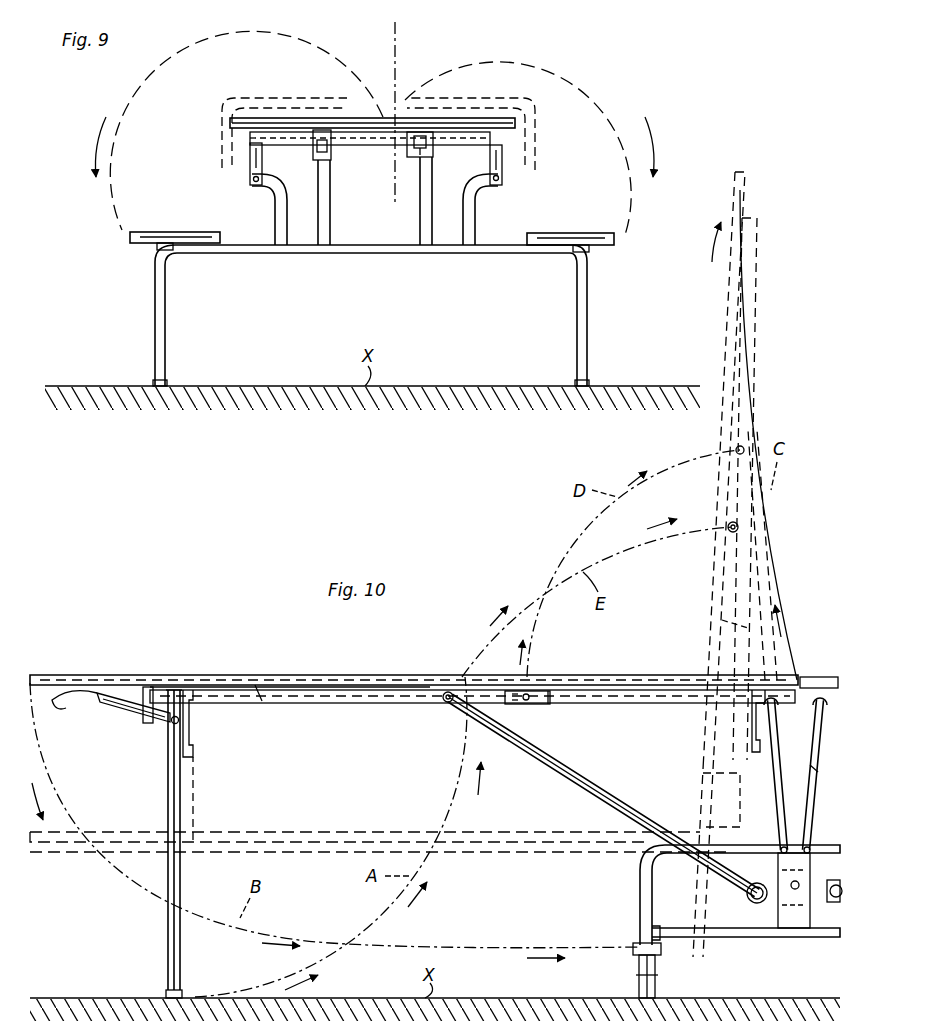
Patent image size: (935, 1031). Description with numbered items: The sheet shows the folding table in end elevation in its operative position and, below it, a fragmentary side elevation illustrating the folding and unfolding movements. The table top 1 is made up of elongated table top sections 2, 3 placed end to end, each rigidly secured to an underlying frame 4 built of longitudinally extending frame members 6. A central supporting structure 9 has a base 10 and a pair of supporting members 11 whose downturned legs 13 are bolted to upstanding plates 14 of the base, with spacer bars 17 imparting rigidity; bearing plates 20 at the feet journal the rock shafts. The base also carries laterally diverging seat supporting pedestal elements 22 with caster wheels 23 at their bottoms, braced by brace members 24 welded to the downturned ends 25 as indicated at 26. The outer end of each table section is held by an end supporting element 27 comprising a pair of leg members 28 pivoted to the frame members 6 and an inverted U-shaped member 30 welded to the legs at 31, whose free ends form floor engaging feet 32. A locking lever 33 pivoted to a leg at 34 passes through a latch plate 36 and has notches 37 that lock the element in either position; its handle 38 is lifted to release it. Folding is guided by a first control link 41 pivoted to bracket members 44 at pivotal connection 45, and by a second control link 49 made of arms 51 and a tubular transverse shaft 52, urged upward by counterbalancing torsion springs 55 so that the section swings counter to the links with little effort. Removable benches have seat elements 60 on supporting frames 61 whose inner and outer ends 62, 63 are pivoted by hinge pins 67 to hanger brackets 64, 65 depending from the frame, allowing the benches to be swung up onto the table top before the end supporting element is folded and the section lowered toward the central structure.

In FIG. 9, the table top 1 is at (455, 120).
In FIG. 10, the table top 1 is at (634, 676).
In FIG. 9, the table top section 2 is at (492, 126).
In FIG. 10, the table top section 2 is at (369, 676).
In FIG. 10, the table top section 3 is at (820, 676).
In FIG. 9, the underlying frame 4 is at (500, 141).
In FIG. 10, the underlying frame 4 is at (354, 699).
In FIG. 10, the longitudinally extending frame member 6 is at (265, 701).
In FIG. 10, the central supporting structure 9 is at (638, 866).
In FIG. 10, the base 10 is at (763, 937).
In FIG. 9, the supporting member 11 is at (416, 44).
In FIG. 10, the supporting member 11 is at (816, 792).
In FIG. 10, the leg 13 is at (814, 769).
In FIG. 10, the upstanding plate 14 is at (807, 925).
In FIG. 10, the spacer bar 17 is at (786, 706).
In FIG. 10, the bearing plate 20 is at (833, 880).
In FIG. 10, the seat supporting pedestal element 22 is at (713, 850).
In FIG. 10, the caster wheel 23 is at (638, 985).
In FIG. 10, the brace member 24 is at (733, 939).
In FIG. 10, the downturned end 25 is at (639, 908).
In FIG. 10, the brace connection 26 is at (650, 934).
In FIG. 9, the end supporting element 27 is at (378, 256).
In FIG. 10, the end supporting element 27 is at (168, 799).
In FIG. 9, the leg member 28 is at (328, 230).
In FIG. 10, the leg member 28 is at (167, 773).
In FIG. 9, the inverted U-shaped member 30 is at (452, 255).
In FIG. 10, the inverted U-shaped member 30 is at (182, 874).
In FIG. 9, the weld connection 31 is at (325, 255).
In FIG. 9, the floor engaging foot 32 is at (168, 383).
In FIG. 10, the floor engaging foot 32 is at (182, 993).
In FIG. 10, the locking lever 33 is at (130, 714).
In FIG. 10, the pivotal connection 34 is at (172, 723).
In FIG. 9, the latch plate 36 is at (430, 157).
In FIG. 10, the latch plate 36 is at (145, 720).
In FIG. 10, the notch 37 is at (110, 710).
In FIG. 9, the handle 38 is at (432, 143).
In FIG. 10, the handle 38 is at (71, 715).
In FIG. 10, the first control link 41 is at (766, 579).
In FIG. 10, the bracket member 44 is at (550, 705).
In FIG. 10, the pivotal connection 45 is at (508, 701).
In FIG. 10, the second control link 49 is at (578, 776).
In FIG. 10, the arm 51 is at (545, 764).
In FIG. 10, the tubular transverse shaft 52 is at (445, 703).
In FIG. 10, the counterbalancing torsion spring 55 is at (748, 900).
In FIG. 9, the seat element 60 is at (176, 232).
In FIG. 10, the seat element 60 is at (320, 832).
In FIG. 9, the supporting frame 61 is at (275, 208).
In FIG. 10, the supporting frame 61 is at (333, 853).
In FIG. 10, the inner end 62 is at (703, 776).
In FIG. 9, the outer end 63 is at (278, 178).
In FIG. 10, the outer end 63 is at (200, 773).
In FIG. 10, the hanger bracket 64 is at (760, 728).
In FIG. 9, the hanger bracket 65 is at (250, 158).
In FIG. 10, the hanger bracket 65 is at (193, 729).
In FIG. 9, the hinge pin 67 is at (253, 179).